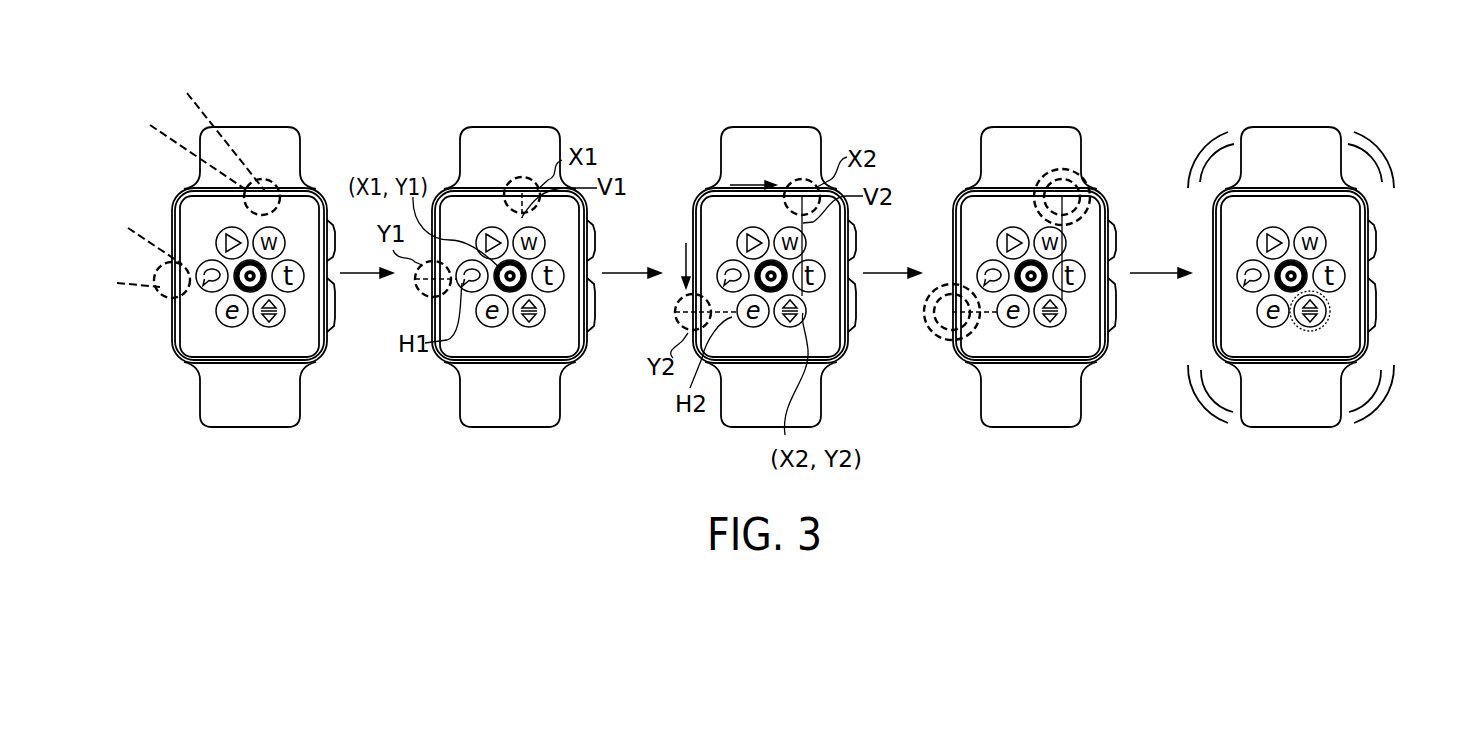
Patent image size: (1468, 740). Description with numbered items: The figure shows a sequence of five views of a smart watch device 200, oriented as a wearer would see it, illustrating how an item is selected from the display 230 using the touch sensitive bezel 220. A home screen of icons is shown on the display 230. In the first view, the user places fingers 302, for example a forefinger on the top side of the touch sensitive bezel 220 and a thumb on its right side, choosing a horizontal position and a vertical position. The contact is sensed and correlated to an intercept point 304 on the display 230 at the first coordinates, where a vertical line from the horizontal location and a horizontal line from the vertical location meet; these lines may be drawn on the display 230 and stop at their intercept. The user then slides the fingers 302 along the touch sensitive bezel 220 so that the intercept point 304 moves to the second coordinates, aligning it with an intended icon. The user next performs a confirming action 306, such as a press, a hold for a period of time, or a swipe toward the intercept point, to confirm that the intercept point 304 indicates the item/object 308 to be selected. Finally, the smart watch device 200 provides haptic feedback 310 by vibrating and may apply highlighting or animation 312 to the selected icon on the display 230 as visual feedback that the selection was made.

The smart watch device 200 is at (262, 288).
The touch sensitive bezel 220 is at (268, 140).
The display 230 is at (513, 300).
The fingers 302 is at (187, 93).
The intercept point 304 is at (578, 295).
The confirming action 306 is at (1082, 175).
The item/object 308 is at (1034, 347).
The haptic feedback 310 is at (1390, 155).
The highlighting or animation 312 is at (1300, 355).